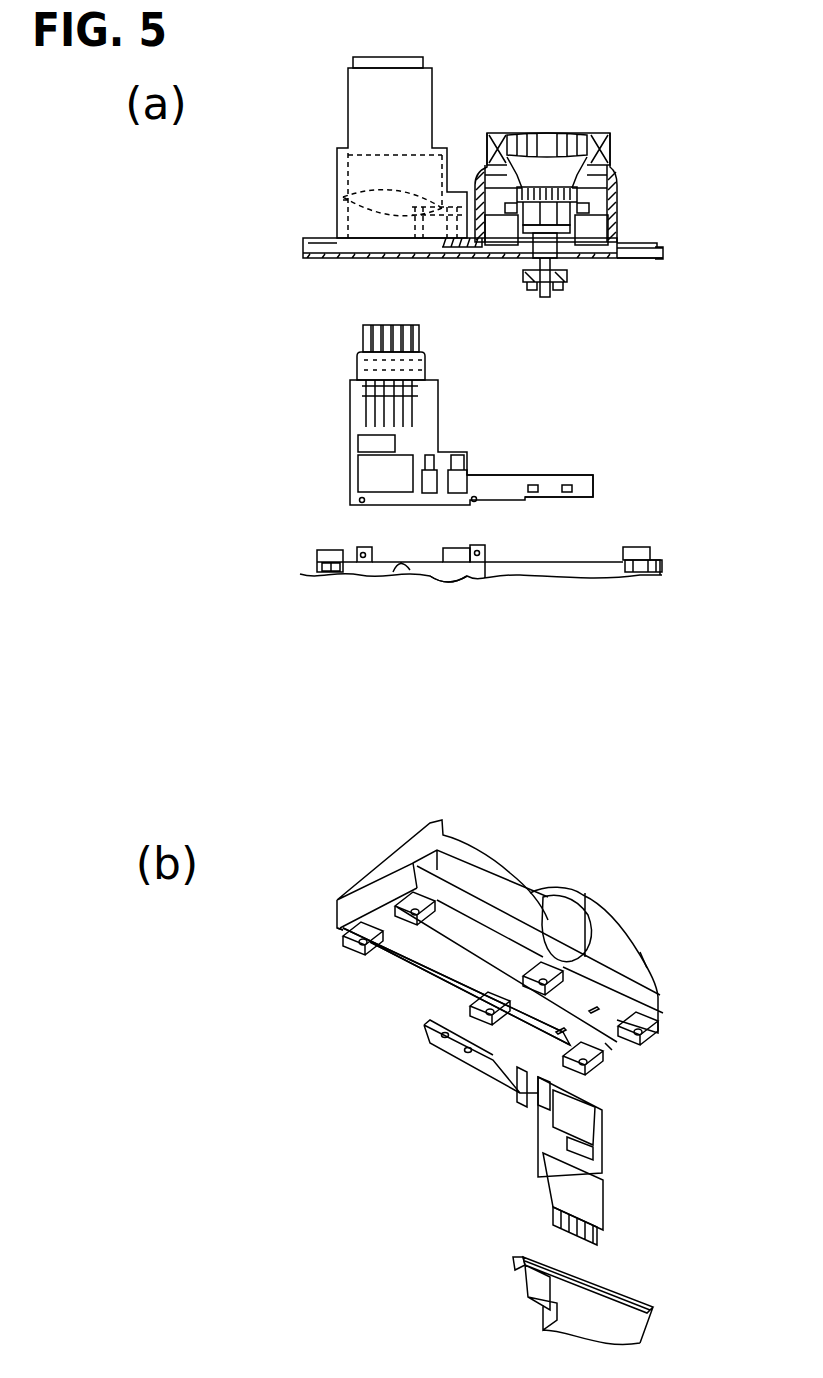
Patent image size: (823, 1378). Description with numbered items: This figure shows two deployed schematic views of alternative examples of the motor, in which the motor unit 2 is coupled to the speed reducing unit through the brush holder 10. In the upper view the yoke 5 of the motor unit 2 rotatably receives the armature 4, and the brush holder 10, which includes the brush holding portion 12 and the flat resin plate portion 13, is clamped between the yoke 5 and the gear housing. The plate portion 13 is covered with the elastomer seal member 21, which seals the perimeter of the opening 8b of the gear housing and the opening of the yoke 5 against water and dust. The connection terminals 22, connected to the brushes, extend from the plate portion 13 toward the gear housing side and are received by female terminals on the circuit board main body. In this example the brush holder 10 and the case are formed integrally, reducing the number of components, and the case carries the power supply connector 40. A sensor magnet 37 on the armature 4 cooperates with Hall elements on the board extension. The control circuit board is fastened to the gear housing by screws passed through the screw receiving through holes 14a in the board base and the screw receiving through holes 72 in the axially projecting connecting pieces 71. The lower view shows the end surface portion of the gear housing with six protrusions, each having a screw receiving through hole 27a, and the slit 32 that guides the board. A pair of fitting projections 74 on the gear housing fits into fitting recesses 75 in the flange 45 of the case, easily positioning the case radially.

The motor unit 2 is at (564, 189).
The armature 4 is at (552, 131).
The yoke 5 is at (620, 207).
The opening 8b is at (428, 962).
The brush holder 10 is at (337, 262).
The brush holding portion 12 is at (588, 243).
The plate portion 13 is at (630, 260).
The screw receiving through holes 14a is at (362, 495).
The seal member 21 is at (663, 251).
The connection terminals 22 is at (343, 200).
The screw receiving through hole 27a is at (653, 1017).
The slit 32 is at (488, 960).
The sensor magnet 37 is at (523, 270).
The power supply connector 40 is at (352, 62).
The flange 45 is at (520, 1258).
The connecting pieces 71 is at (363, 550).
The screw receiving through hole 72 is at (350, 557).
The fitting projections 74 is at (647, 967).
The fitting recesses 75 is at (600, 1277).